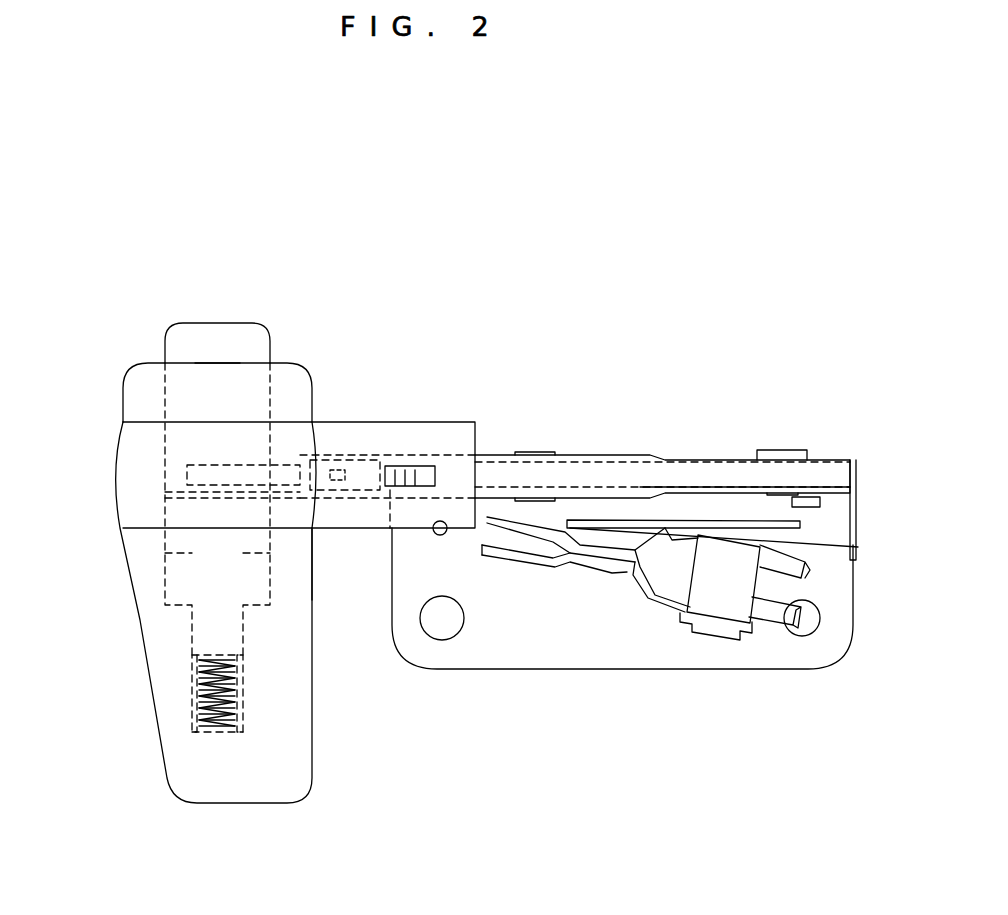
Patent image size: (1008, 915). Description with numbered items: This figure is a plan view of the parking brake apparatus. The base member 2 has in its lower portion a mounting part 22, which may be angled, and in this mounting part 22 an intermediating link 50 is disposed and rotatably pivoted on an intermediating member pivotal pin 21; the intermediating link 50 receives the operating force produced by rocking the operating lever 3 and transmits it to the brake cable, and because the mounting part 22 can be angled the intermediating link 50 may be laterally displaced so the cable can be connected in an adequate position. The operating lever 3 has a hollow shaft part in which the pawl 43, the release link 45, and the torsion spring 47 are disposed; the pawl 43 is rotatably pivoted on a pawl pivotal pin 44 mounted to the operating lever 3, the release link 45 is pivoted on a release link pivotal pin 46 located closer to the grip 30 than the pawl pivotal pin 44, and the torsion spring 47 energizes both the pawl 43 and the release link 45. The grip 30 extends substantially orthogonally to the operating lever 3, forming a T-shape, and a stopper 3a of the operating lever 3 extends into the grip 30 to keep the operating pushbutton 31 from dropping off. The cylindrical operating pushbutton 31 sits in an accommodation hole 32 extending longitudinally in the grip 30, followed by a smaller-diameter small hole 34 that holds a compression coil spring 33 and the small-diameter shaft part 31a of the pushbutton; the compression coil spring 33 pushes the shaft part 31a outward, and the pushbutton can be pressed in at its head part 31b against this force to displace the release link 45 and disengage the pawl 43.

The base member 2 is at (498, 640).
The operating lever 3 is at (448, 422).
The stopper 3a is at (178, 492).
The intermediating member pivotal pin 21 is at (731, 530).
The mounting part 22 is at (807, 540).
The grip 30 is at (140, 640).
The operating pushbutton 31 is at (222, 335).
The shaft part 31a is at (215, 625).
The head part 31b is at (185, 323).
The accommodation hole 32 is at (265, 582).
The compression coil spring 33 is at (216, 722).
The small hole 34 is at (243, 672).
The pawl 43 is at (600, 470).
The pawl pivotal pin 44 is at (535, 455).
The release link 45 is at (215, 470).
The release link pivotal pin 46 is at (343, 455).
The torsion spring 47 is at (397, 455).
The intermediating link 50 is at (610, 575).